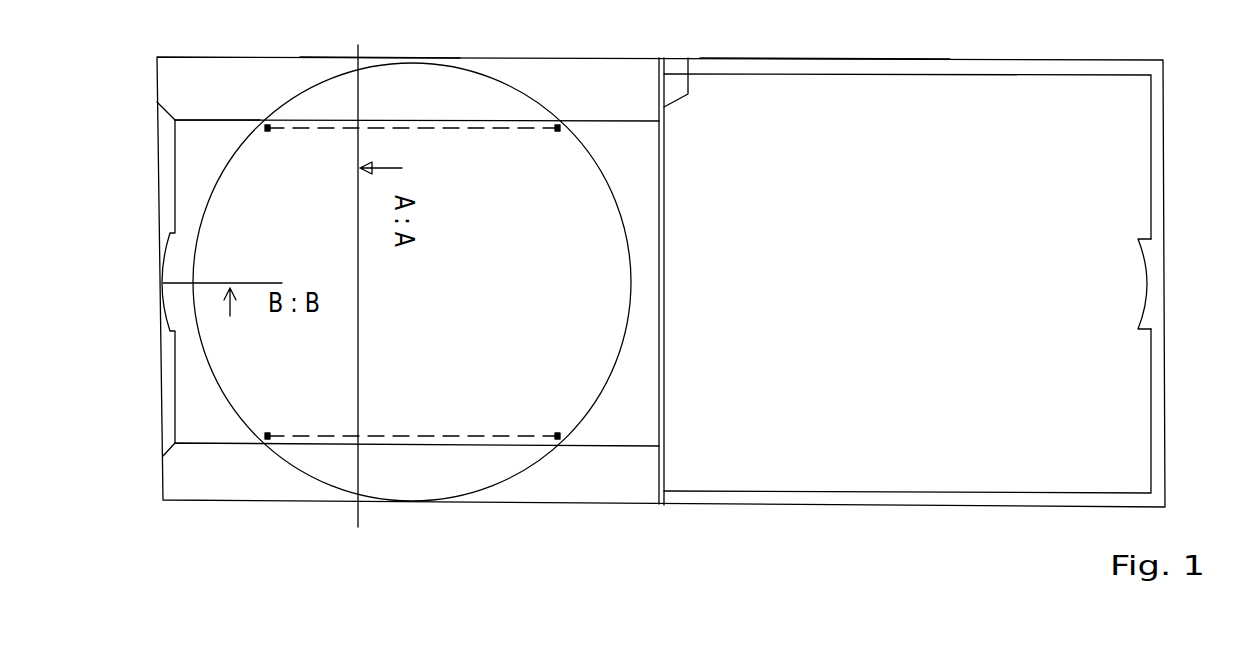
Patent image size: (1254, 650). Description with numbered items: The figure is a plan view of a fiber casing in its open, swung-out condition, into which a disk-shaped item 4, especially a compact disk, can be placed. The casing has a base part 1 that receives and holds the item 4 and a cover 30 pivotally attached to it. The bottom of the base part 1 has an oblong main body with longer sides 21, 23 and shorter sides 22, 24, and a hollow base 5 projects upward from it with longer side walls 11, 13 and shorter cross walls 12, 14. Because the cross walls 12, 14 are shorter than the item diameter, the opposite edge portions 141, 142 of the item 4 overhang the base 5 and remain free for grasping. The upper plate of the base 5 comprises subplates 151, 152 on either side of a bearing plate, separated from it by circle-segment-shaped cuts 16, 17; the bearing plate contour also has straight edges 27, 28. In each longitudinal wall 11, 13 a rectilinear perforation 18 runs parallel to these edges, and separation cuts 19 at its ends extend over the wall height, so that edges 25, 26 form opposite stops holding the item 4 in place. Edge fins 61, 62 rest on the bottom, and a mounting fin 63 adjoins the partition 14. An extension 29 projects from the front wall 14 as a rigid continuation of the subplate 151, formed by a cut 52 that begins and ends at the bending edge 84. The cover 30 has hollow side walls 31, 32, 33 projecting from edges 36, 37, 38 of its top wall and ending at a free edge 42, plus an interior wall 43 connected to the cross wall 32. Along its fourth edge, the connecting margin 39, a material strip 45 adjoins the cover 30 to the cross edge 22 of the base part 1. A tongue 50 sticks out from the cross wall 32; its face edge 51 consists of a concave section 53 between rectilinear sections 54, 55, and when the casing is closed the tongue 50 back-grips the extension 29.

The base part 1 is at (1163, 50).
The disk-shaped item 4 is at (464, 285).
The base 5 is at (216, 104).
The side wall 11 is at (604, 106).
The side wall 12 is at (658, 420).
The side wall 13 is at (608, 459).
The side wall 14 is at (166, 152).
The cut 16 is at (231, 420).
The cut 17 is at (624, 196).
The perforation 18 is at (455, 132).
The separation cuts 19 is at (268, 133).
The side 21 is at (378, 57).
The side 22 is at (659, 107).
The side 23 is at (397, 502).
The side 24 is at (154, 202).
The stop 25 is at (268, 120).
The stop 26 is at (557, 120).
The straight edge 27 is at (445, 120).
The straight edge 28 is at (328, 447).
The extension 29 is at (154, 318).
The cover 30 is at (996, 46).
The side wall 31 is at (828, 46).
The side wall 32 is at (1180, 200).
The side wall 33 is at (871, 518).
The edge 36 is at (893, 92).
The edge 37 is at (1137, 140).
The edge 38 is at (753, 475).
The connecting margin 39 is at (688, 57).
The free edge 42 is at (1165, 392).
The interior wall 43 is at (892, 305).
The material strip 45 is at (665, 290).
The tongue 50 is at (1132, 296).
The face edge 51 is at (1131, 250).
The cut 52 is at (156, 259).
The concave section 53 is at (1140, 305).
The rectilinear section 54 is at (1138, 239).
The rectilinear section 55 is at (1140, 318).
The edge fin 61 is at (498, 67).
The edge fin 62 is at (563, 467).
The mounting fin 63 is at (172, 365).
The bending edge 84 is at (175, 428).
The edge portion 141 is at (422, 90).
The edge portion 142 is at (438, 480).
The subplate 151 is at (179, 152).
The subplate 152 is at (607, 152).